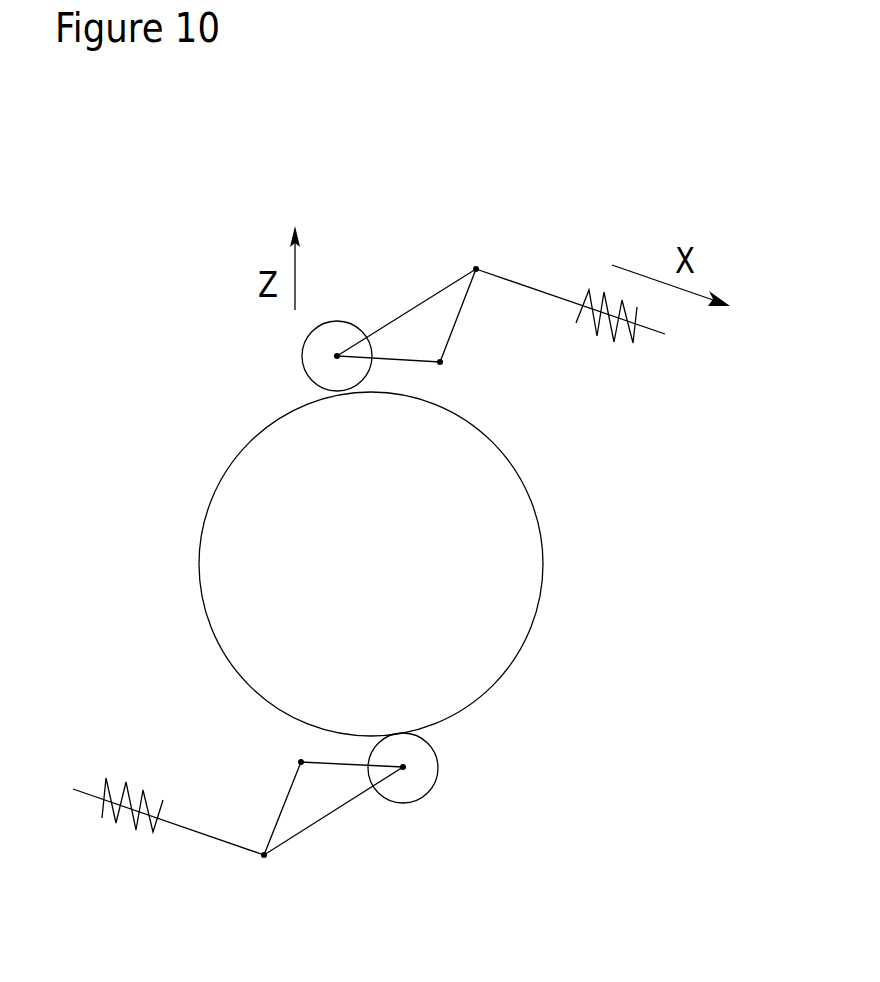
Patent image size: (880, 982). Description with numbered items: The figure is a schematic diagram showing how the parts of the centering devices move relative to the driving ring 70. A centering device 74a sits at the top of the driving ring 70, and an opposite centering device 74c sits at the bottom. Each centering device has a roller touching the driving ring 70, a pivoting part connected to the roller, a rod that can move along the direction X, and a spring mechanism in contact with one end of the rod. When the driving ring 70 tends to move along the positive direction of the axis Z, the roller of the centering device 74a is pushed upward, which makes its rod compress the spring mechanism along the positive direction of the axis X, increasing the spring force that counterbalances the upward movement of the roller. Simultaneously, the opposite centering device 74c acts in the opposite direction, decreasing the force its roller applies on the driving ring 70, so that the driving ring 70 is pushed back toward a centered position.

The driving ring 70 is at (543, 572).
The centering device 74a is at (436, 186).
The opposite centering device 74c is at (419, 856).